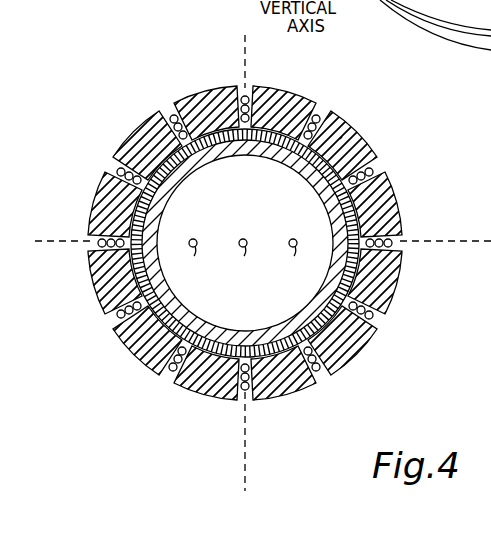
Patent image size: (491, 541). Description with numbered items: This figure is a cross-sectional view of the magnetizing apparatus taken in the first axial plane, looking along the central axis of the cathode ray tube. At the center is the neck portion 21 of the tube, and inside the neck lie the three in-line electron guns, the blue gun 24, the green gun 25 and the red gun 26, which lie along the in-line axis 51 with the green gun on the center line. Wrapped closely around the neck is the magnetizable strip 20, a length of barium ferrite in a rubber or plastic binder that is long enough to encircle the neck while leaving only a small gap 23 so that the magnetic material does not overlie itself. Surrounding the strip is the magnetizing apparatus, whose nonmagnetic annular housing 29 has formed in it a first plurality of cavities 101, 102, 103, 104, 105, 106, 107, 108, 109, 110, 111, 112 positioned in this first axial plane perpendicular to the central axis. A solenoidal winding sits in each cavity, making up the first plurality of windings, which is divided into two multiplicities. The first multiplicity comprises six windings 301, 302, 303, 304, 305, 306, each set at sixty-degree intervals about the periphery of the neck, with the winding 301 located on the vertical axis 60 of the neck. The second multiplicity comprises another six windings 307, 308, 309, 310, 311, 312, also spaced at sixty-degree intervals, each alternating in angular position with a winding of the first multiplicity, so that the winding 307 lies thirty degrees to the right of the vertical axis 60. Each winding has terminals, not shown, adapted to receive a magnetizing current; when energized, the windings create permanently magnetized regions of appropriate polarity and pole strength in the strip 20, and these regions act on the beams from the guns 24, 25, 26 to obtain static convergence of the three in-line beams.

The magnetizable strip 20 is at (184, 157).
The neck portion 21 is at (301, 162).
The gap 23 is at (248, 140).
The blue gun 24 is at (193, 263).
The green gun 25 is at (243, 263).
The red gun 26 is at (293, 263).
The annular housing 29 is at (342, 137).
The in-line axis 51 is at (50, 249).
The vertical axis 60 is at (243, 6).
The cavity 101 is at (238, 86).
The cavity 102 is at (378, 153).
The cavity 103 is at (386, 310).
The cavity 104 is at (254, 398).
The cavity 105 is at (118, 334).
The cavity 106 is at (104, 172).
The cavity 107 is at (333, 118).
The cavity 108 is at (392, 236).
The cavity 109 is at (318, 382).
The cavity 110 is at (180, 385).
The cavity 111 is at (92, 252).
The cavity 112 is at (159, 111).
The winding 301 is at (250, 92).
The winding 302 is at (374, 171).
The winding 303 is at (374, 319).
The winding 304 is at (244, 391).
The winding 305 is at (118, 316).
The winding 306 is at (117, 168).
The winding 307 is at (320, 112).
The winding 308 is at (394, 248).
The winding 309 is at (316, 372).
The winding 310 is at (172, 371).
The winding 311 is at (97, 243).
The winding 312 is at (172, 113).